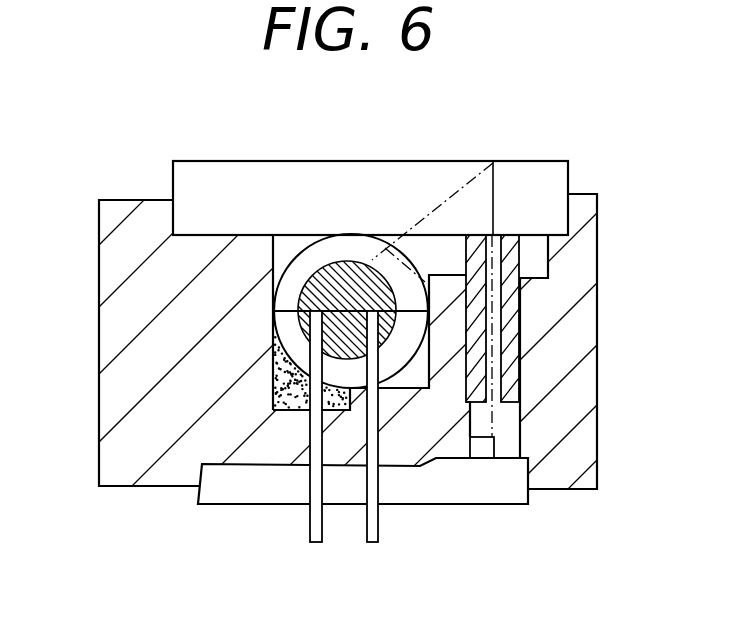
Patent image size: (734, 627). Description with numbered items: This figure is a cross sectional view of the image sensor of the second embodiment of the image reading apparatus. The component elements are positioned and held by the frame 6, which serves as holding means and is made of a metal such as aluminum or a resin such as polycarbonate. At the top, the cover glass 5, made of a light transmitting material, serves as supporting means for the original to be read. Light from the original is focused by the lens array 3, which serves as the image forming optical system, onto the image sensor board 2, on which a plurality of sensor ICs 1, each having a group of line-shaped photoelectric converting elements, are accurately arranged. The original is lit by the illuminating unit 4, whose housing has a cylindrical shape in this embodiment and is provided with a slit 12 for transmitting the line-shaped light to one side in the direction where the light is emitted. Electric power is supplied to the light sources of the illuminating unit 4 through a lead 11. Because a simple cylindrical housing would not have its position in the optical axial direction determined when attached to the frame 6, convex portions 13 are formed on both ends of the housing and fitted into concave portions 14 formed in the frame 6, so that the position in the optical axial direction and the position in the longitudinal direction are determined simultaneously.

The sensor IC 1 is at (495, 443).
The image sensor board 2 is at (492, 488).
The lens array 3 is at (513, 303).
The illuminating unit 4 is at (312, 260).
The cover glass 5 is at (187, 193).
The frame 6 is at (120, 318).
The lead 11 is at (372, 540).
The slit 12 is at (388, 257).
The convex portion 13 is at (294, 393).
The concave portion 14 is at (270, 387).